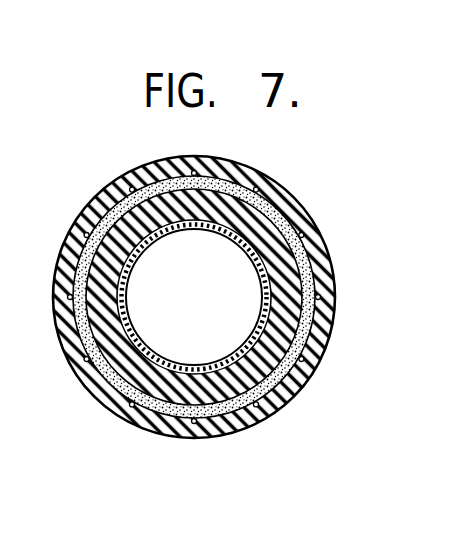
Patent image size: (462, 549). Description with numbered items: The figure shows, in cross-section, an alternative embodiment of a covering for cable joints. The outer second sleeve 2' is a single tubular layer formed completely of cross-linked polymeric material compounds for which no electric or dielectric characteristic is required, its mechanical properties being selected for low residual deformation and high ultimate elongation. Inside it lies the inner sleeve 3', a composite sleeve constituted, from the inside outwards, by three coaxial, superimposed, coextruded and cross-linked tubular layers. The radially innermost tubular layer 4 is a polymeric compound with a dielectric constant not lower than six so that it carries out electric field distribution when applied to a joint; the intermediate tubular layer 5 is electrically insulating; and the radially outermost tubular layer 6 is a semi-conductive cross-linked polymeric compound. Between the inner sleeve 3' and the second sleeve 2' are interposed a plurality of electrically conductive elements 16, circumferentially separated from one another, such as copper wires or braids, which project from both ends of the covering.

The second sleeve 2' is at (198, 297).
The inner sleeve 3' is at (182, 288).
The electrically conductive elements 16 is at (305, 240).
The radially innermost tubular layer 4 is at (253, 258).
The intermediate tubular layer 5 is at (280, 285).
The radially outermost tubular layer 6 is at (285, 318).